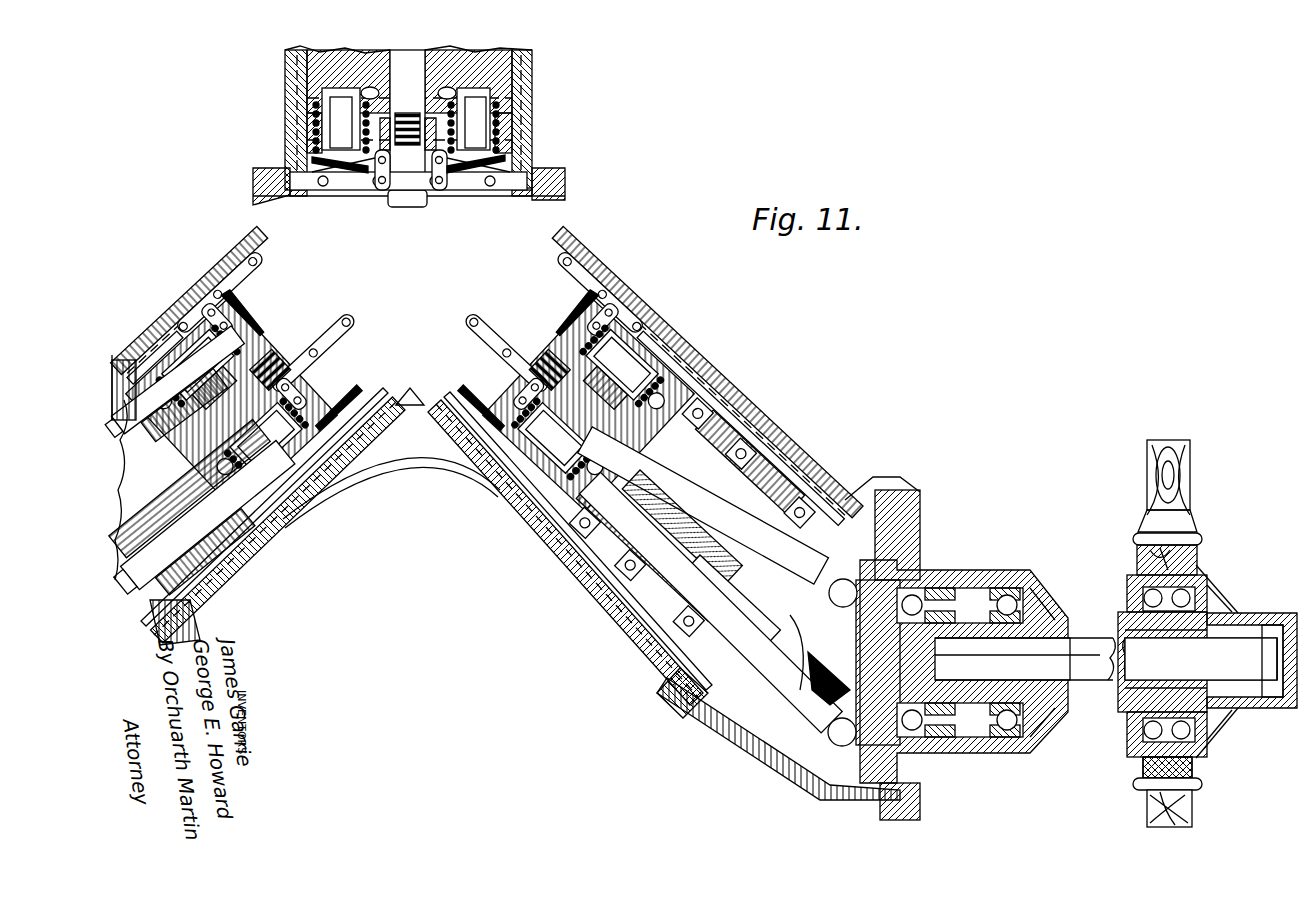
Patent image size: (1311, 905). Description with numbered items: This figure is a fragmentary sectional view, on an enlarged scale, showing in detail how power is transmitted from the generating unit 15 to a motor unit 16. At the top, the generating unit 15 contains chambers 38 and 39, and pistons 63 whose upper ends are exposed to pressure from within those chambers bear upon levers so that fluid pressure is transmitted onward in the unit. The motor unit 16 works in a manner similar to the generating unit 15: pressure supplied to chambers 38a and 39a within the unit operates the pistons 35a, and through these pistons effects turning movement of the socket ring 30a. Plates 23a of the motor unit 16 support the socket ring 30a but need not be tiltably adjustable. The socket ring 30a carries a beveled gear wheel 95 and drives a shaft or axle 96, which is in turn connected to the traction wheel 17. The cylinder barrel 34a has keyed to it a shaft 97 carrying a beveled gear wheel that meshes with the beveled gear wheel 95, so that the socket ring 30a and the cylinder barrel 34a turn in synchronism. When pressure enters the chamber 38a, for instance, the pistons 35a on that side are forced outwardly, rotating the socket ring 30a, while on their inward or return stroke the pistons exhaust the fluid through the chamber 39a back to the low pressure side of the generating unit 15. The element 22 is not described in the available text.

The generating unit 15 is at (528, 100).
The motor unit 16 is at (196, 291).
The traction wheel 17 is at (1165, 483).
The cylinder head 22 is at (470, 70).
The plate 23a is at (897, 520).
The socket ring 30a is at (890, 560).
The cylinder barrel 34a is at (760, 490).
The piston 35a is at (790, 522).
The chamber 38 is at (300, 84).
The chamber 38a is at (166, 332).
The chamber 39 is at (500, 112).
The chamber 39a is at (344, 496).
The piston 63 is at (492, 128).
The beveled gear wheel 95 is at (836, 708).
The shaft or axle 96 is at (1078, 648).
The shaft 97 is at (780, 645).